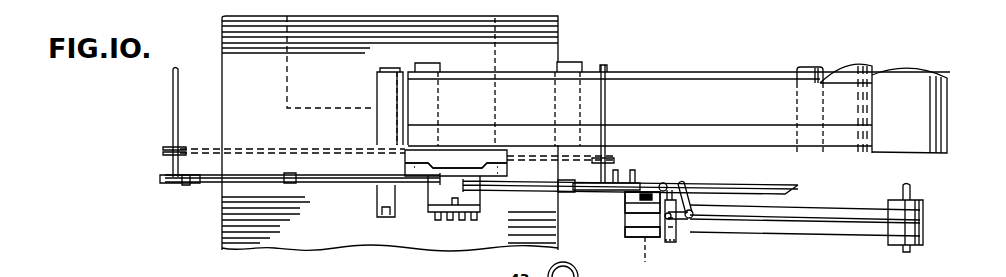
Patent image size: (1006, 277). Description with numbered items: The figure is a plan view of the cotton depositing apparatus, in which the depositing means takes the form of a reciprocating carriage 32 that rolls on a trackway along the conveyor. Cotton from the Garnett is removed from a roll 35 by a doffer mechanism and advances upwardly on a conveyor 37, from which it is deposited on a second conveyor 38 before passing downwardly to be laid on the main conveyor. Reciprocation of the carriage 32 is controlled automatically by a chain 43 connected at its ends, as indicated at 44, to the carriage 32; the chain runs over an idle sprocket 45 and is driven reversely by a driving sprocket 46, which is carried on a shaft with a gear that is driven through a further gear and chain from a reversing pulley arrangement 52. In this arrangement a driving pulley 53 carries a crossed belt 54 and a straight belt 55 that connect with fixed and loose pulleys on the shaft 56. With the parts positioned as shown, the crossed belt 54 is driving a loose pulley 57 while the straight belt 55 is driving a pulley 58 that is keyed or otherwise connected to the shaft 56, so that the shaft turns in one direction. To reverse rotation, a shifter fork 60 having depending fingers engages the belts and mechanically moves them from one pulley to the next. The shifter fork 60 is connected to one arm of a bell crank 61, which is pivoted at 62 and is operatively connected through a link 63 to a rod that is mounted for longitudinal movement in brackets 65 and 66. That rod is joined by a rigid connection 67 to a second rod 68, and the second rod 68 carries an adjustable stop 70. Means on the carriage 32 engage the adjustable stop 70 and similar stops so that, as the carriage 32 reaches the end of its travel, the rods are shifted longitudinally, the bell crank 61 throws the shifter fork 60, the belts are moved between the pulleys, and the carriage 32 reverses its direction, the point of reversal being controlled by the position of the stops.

The carriage 32 is at (498, 151).
The roll 35 is at (930, 117).
The conveyor 37 is at (785, 77).
The second conveyor 38 is at (535, 73).
The chain 43 is at (290, 149).
The chain connection 44 is at (509, 161).
The idle sprocket 45 is at (166, 146).
The driving sprocket 46 is at (613, 161).
The reversing pulley arrangement 52 is at (630, 232).
The driving pulley 53 is at (922, 203).
The crossed belt 54 is at (843, 238).
The straight belt 55 is at (822, 214).
The shaft 56 is at (650, 257).
The loose pulley 57 is at (632, 240).
The pulley 58 is at (626, 208).
The shifter fork 60 is at (677, 230).
The bell crank 61 is at (694, 203).
The pivot 62 is at (690, 218).
The link 63 is at (667, 189).
The bracket 65 is at (636, 178).
The bracket 66 is at (186, 185).
The rigid connection 67 is at (567, 193).
The second rod 68 is at (326, 184).
The adjustable stop 70 is at (296, 174).